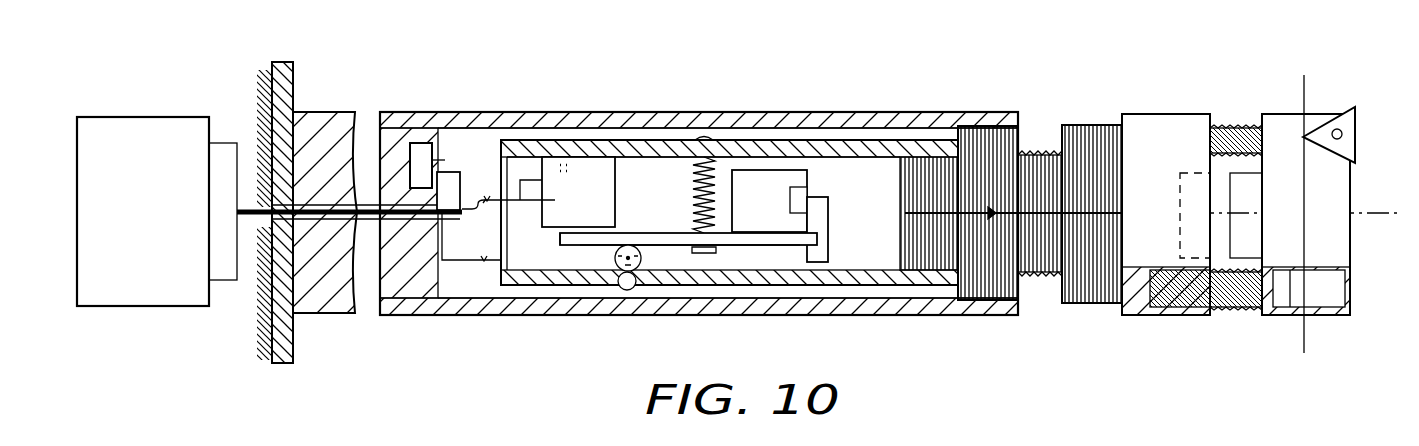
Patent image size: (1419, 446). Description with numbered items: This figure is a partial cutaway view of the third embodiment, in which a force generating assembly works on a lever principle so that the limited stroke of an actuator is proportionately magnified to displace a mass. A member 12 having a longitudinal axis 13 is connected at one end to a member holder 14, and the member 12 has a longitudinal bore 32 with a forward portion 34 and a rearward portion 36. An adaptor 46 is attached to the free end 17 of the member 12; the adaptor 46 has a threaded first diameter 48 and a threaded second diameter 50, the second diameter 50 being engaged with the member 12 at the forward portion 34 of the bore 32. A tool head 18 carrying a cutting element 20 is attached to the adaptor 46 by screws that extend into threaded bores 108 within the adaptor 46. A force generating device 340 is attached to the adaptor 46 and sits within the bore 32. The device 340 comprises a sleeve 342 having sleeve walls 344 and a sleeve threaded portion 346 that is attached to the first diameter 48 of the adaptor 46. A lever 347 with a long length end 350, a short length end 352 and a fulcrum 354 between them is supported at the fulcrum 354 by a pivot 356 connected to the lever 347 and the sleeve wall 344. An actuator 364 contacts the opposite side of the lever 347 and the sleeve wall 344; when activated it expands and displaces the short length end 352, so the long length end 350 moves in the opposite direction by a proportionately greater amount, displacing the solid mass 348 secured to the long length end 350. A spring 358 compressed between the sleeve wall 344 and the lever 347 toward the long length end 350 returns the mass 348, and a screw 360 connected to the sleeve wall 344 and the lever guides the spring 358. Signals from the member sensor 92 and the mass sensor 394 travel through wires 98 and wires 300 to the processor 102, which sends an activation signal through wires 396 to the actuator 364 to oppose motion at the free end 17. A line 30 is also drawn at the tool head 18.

The processor 102 is at (160, 117).
The member holder 14 is at (283, 62).
The member 12 is at (328, 112).
The member sensor 92 is at (420, 143).
The wires 98 is at (462, 181).
The wires 396 is at (476, 212).
The rearward portion 36 is at (468, 130).
The longitudinal bore 32 is at (876, 127).
The forward portion 34 is at (919, 134).
The force generating device 340 is at (628, 128).
The sleeve 342 is at (817, 140).
The sleeve walls 344 is at (835, 157).
The screw 360 is at (703, 136).
The actuator 364 is at (615, 180).
The spring 358 is at (692, 212).
The solid mass 348 is at (768, 175).
The mass sensor 394 is at (790, 209).
The wires 300 is at (829, 218).
The long length end 350 is at (818, 241).
The short length end 352 is at (560, 237).
The lever 347 is at (783, 246).
The fulcrum 354 is at (640, 252).
The pivot 356 is at (606, 288).
The sleeve threaded portion 346 is at (936, 248).
The longitudinal axis 13 is at (1381, 213).
The free end 17 is at (1018, 118).
The threaded first diameter 48 is at (1036, 273).
The threaded second diameter 50 is at (1092, 303).
The adaptor 46 is at (1153, 123).
The threaded bores 108 is at (1173, 308).
The tool head 18 is at (1353, 235).
The cutting element 20 is at (1357, 120).
The tool reference line 30 is at (1304, 340).